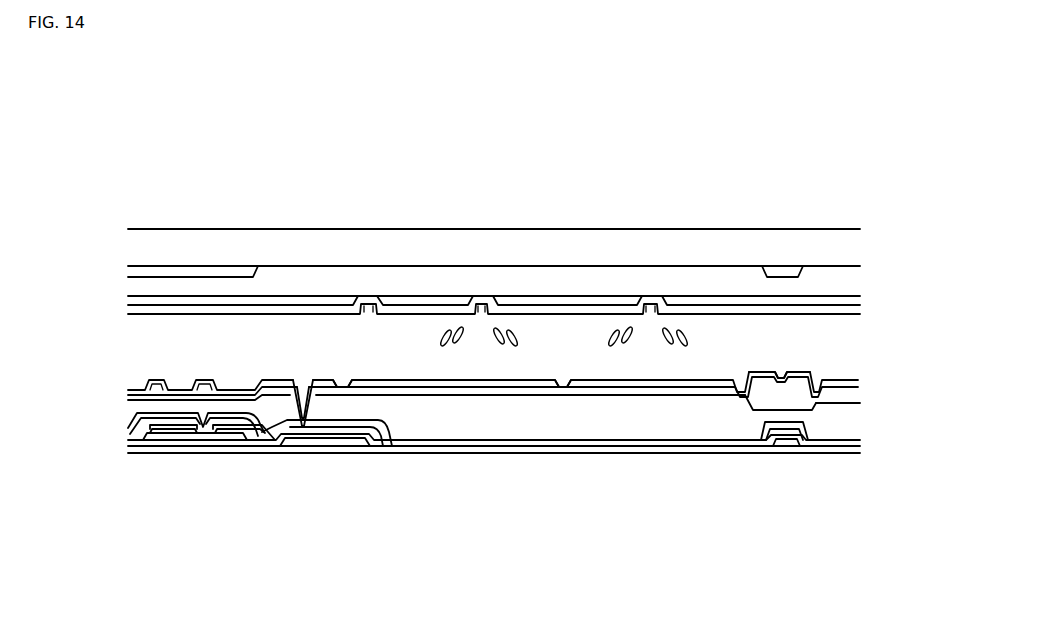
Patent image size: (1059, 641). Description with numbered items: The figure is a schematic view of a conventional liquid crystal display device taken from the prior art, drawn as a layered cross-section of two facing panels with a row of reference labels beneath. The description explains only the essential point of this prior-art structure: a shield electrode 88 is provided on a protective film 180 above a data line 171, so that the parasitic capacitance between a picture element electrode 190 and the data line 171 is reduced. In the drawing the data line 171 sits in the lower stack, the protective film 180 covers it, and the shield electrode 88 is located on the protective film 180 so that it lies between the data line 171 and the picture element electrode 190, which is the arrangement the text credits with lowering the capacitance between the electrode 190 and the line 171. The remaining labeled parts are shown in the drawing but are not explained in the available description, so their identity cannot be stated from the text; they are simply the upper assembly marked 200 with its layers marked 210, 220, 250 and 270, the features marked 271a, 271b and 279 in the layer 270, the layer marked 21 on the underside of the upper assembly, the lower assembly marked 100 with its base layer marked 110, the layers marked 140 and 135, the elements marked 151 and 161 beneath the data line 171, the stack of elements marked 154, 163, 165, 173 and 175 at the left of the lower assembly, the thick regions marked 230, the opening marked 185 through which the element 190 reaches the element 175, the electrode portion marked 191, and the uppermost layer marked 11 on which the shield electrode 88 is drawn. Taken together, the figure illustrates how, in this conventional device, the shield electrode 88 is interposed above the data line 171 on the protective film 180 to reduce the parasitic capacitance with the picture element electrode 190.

The upper display panel 200 is at (183, 207).
The upper substrate 210 is at (313, 247).
The light blocking member 220 is at (225, 275).
The overcoat 250 is at (612, 276).
The common electrode 270 is at (318, 302).
The cutout of common electrode 271a is at (481, 310).
The cutout of common electrode 271b is at (650, 310).
The cutout of common electrode 279 is at (371, 310).
The alignment layer 21 is at (130, 311).
The lower display panel 100 is at (92, 427).
The lower substrate 110 is at (401, 462).
The gate insulating layer 140 is at (450, 450).
The storage electrode 135 is at (330, 443).
The gate line 151 is at (784, 448).
The semiconductor stripe 161 is at (775, 438).
The data line 171 is at (794, 432).
The semiconductor 154 is at (190, 438).
The ohmic contact 163 is at (158, 438).
The ohmic contact 165 is at (228, 440).
The source electrode 173 is at (176, 428).
The drain electrode 175 is at (268, 415).
The protective film 180 is at (632, 446).
The color filter 230 is at (289, 426).
The contact hole 185 is at (302, 378).
The picture element electrode 190 is at (490, 393).
The pixel electrode 191 is at (346, 378).
The alignment layer 11 is at (850, 380).
The shield electrode 88 is at (207, 380).